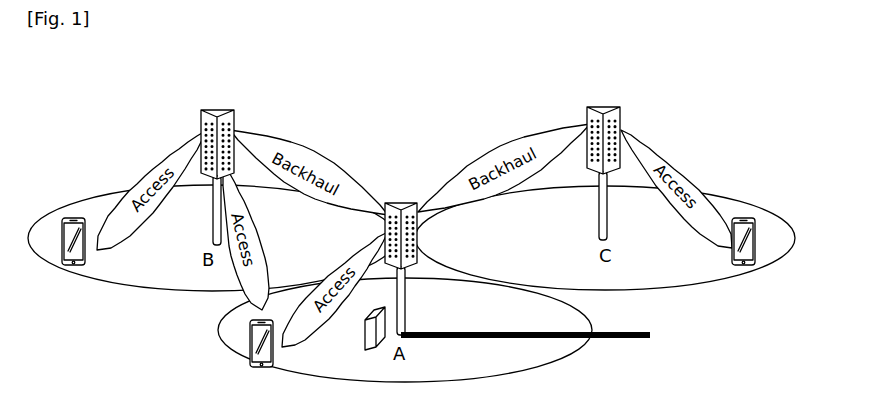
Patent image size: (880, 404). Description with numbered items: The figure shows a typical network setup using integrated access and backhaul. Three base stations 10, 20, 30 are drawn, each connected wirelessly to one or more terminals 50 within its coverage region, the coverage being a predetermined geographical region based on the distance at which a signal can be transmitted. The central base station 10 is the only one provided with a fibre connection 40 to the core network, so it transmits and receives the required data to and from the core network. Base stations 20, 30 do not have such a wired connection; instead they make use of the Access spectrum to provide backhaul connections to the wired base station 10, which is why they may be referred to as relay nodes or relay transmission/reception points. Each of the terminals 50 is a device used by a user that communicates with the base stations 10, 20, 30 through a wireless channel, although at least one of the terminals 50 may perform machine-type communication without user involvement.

The base station 10 is at (400, 202).
The base station 20 is at (216, 108).
The base station 30 is at (604, 106).
The fibre connection 40 is at (556, 350).
The terminals 50 is at (77, 217).